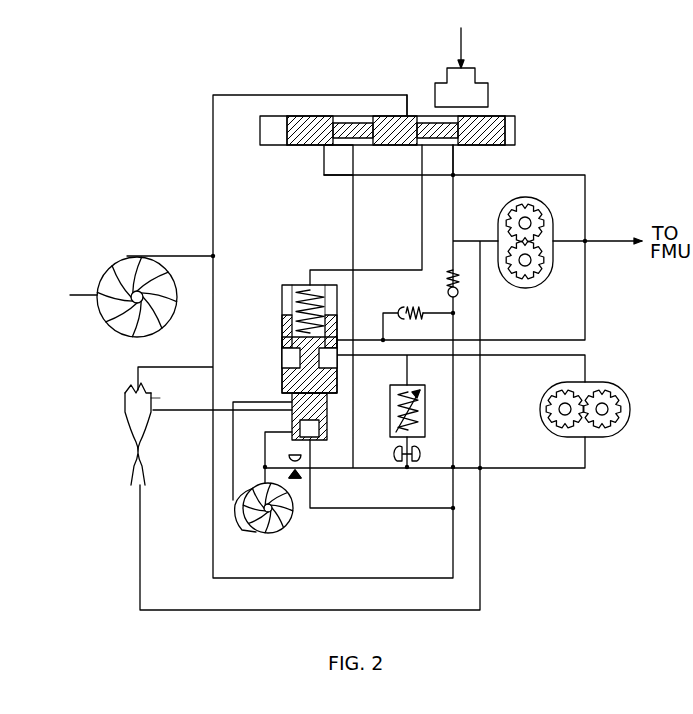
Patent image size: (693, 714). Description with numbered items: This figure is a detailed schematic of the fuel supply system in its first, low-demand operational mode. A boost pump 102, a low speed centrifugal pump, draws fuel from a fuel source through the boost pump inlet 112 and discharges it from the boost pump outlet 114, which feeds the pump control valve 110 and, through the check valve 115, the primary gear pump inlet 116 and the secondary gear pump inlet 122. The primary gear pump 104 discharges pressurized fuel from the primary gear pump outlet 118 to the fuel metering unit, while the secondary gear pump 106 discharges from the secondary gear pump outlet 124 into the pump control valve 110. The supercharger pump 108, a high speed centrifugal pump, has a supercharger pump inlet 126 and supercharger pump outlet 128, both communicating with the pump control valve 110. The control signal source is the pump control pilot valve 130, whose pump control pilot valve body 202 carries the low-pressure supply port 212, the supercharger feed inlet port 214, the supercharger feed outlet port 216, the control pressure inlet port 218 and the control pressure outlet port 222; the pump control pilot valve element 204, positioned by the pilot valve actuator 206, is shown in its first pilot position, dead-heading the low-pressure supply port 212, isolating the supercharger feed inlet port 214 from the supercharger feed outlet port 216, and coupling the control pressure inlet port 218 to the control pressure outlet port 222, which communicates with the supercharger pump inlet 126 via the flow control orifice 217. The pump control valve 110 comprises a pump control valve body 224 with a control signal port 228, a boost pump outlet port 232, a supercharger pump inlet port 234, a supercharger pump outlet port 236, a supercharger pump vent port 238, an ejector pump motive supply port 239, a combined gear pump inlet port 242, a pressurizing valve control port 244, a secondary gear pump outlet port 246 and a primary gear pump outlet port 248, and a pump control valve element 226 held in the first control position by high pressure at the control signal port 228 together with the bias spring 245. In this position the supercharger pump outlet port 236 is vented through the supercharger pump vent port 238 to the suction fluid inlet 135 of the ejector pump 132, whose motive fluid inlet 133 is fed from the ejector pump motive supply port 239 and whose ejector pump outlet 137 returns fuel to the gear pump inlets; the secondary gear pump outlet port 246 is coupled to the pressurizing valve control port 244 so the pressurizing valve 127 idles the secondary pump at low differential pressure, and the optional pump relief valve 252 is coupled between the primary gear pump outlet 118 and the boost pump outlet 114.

The boost pump 102 is at (114, 268).
The primary gear pump 104 is at (498, 220).
The secondary gear pump 106 is at (540, 418).
The supercharger pump 108 is at (253, 496).
The pump control valve 110 is at (290, 352).
The boost pump inlet 112 is at (100, 298).
The boost pump outlet 114 is at (146, 257).
The check valve 115 is at (460, 291).
The primary gear pump inlet 116 is at (498, 240).
The primary gear pump outlet 118 is at (553, 235).
The secondary gear pump inlet 122 is at (585, 440).
The secondary gear pump outlet 124 is at (585, 385).
The supercharger pump inlet 126 is at (250, 492).
The pressurizing valve 127 is at (425, 410).
The supercharger pump outlet 128 is at (243, 524).
The pump control pilot valve 130 is at (563, 82).
The ejector pump 132 is at (136, 481).
The motive fluid inlet 133 is at (131, 395).
The suction fluid inlet 135 is at (153, 401).
The ejector pump outlet 137 is at (131, 490).
The pump control pilot valve body 202 is at (421, 128).
The pump control pilot valve element 204 is at (385, 125).
The pilot valve actuator 206 is at (475, 74).
The low-pressure supply port 212 is at (407, 104).
The supercharger feed inlet port 214 is at (324, 160).
The supercharger feed outlet port 216 is at (346, 146).
The flow control orifice 217 is at (296, 480).
The control pressure inlet port 218 is at (453, 146).
The control pressure outlet port 222 is at (422, 146).
The pump control valve body 224 is at (296, 318).
The pump control valve element 226 is at (287, 340).
The control signal port 228 is at (310, 284).
The boost pump outlet port 232 is at (320, 440).
The supercharger pump inlet port 234 is at (280, 435).
The supercharger pump outlet port 236 is at (292, 395).
The supercharger pump vent port 238 is at (262, 420).
The ejector pump motive supply port 239 is at (292, 362).
The combined gear pump inlet port 242 is at (339, 415).
The pressurizing valve control port 244 is at (336, 360).
The bias spring 245 is at (298, 292).
The secondary gear pump outlet port 246 is at (340, 350).
The primary gear pump outlet port 248 is at (340, 345).
The pump relief valve 252 is at (440, 313).